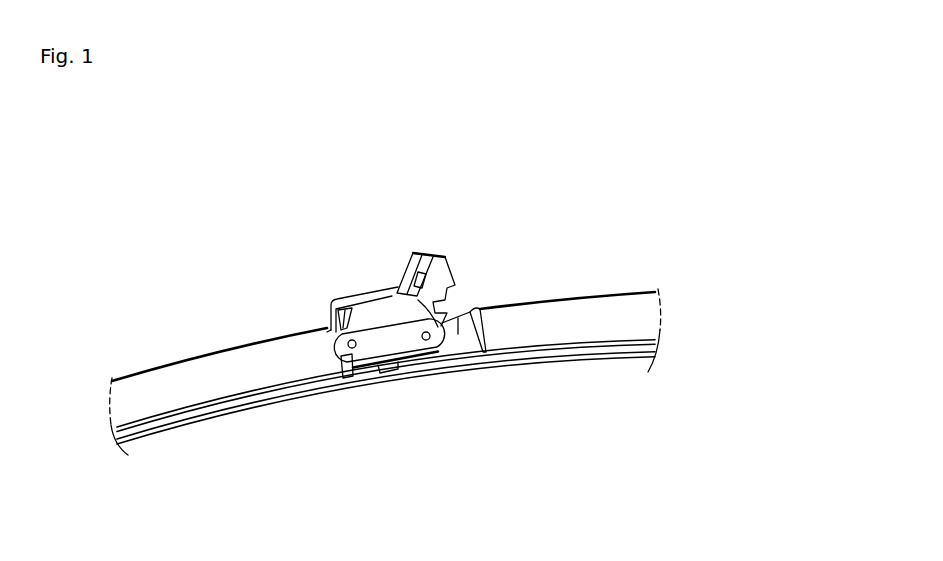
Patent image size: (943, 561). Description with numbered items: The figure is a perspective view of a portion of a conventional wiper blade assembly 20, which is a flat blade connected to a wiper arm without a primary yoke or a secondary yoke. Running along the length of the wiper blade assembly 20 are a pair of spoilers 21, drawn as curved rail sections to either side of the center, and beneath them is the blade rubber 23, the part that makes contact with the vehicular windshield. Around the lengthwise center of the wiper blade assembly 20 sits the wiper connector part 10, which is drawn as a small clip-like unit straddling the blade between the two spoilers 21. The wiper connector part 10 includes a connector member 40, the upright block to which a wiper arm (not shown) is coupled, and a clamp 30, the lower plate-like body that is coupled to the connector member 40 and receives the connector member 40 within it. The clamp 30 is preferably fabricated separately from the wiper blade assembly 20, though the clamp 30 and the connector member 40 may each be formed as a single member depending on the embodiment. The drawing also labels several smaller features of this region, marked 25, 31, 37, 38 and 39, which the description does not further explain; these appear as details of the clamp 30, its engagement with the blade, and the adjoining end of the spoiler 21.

The wiper connector part 10 is at (396, 310).
The wiper blade assembly 20 is at (385, 380).
The spoilers 21 is at (232, 360).
The blade rubber 23 is at (210, 413).
The rail end portion 25 is at (459, 333).
The clamp 30 is at (426, 392).
The engaging hook 31 is at (386, 373).
The latch leg 37 is at (344, 378).
The housing 38 is at (404, 309).
The hole 39 is at (431, 339).
The connector member 40 is at (438, 257).